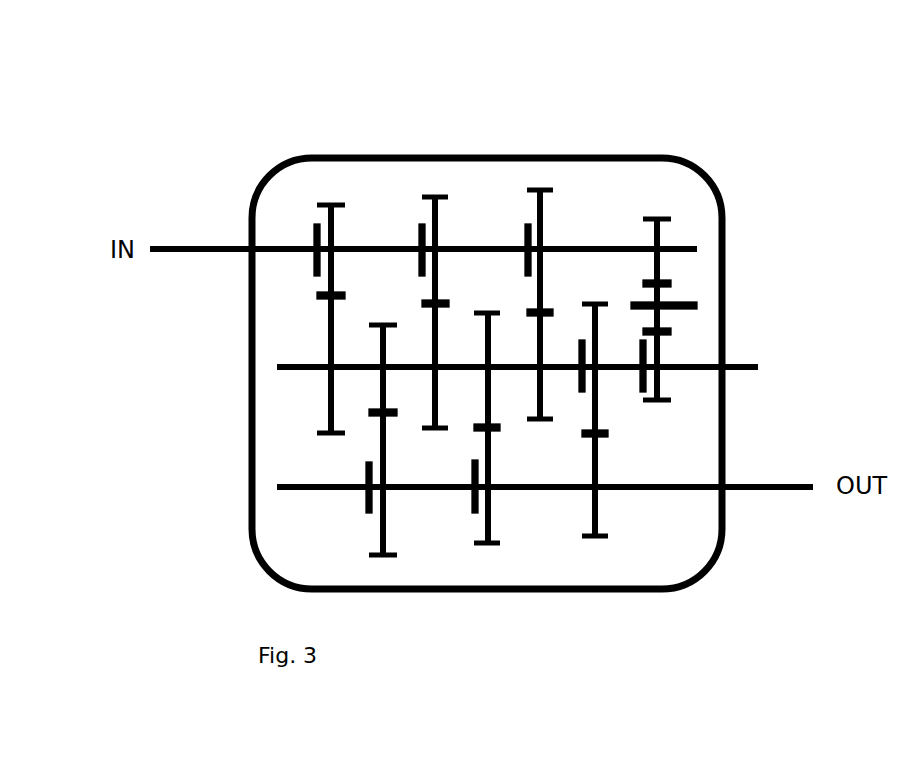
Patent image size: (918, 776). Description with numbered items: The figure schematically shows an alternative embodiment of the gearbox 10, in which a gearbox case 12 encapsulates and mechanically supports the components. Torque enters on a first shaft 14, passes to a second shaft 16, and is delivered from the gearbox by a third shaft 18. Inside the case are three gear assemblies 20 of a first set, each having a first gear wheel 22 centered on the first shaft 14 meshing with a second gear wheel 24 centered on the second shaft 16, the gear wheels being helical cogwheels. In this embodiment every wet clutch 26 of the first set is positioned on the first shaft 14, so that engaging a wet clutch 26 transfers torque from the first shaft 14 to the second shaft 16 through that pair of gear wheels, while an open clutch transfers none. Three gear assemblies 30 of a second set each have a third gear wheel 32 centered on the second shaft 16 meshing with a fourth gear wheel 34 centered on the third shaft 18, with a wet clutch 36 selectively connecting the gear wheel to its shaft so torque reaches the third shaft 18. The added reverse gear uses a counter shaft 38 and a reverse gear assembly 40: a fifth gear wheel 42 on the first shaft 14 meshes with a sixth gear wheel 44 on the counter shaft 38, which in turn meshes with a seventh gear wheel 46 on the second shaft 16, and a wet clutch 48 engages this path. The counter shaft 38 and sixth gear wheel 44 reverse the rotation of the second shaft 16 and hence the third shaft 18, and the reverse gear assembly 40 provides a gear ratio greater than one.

The gearbox 10 is at (673, 115).
The gearbox case 12 is at (705, 170).
The first shaft 14 is at (673, 243).
The second shaft 16 is at (310, 363).
The third shaft 18 is at (672, 482).
The gear assembly of the first set 20 is at (385, 244).
The first gear wheel 22 is at (318, 223).
The second gear wheel 24 is at (329, 328).
The wet clutch 26 is at (331, 195).
The gear assembly of the second set 30 is at (442, 492).
The third gear wheel 32 is at (385, 390).
The fourth gear wheel 34 is at (380, 530).
The wet clutch 36 is at (262, 473).
The counter shaft 38 is at (680, 302).
The reverse gear assembly 40 is at (729, 322).
The fifth gear wheel 42 is at (660, 263).
The sixth gear wheel 44 is at (658, 317).
The seventh gear wheel 46 is at (658, 353).
The wet clutch 48 is at (643, 373).